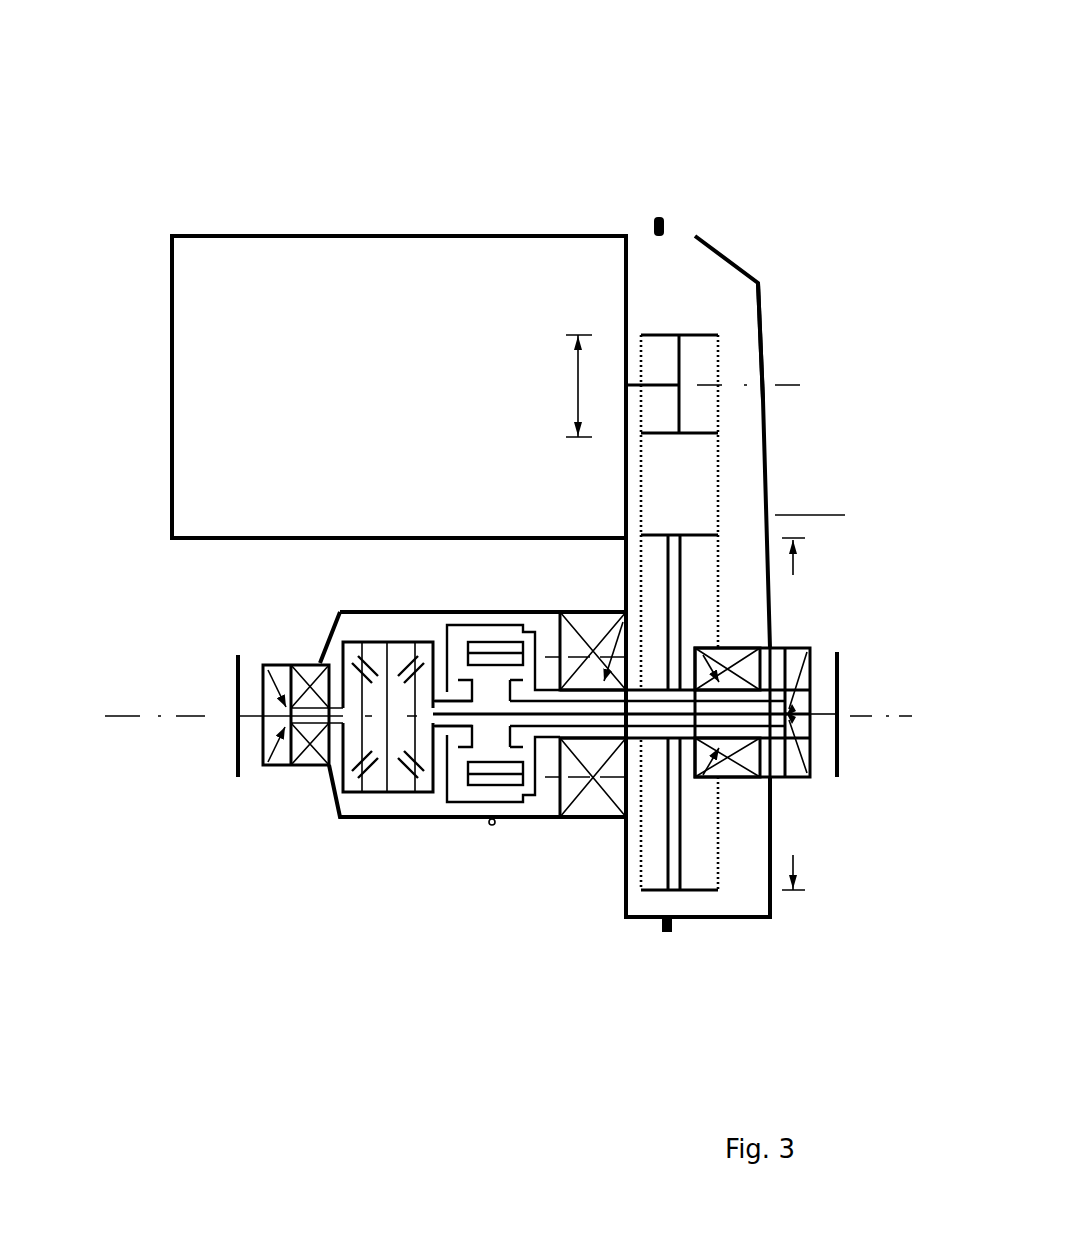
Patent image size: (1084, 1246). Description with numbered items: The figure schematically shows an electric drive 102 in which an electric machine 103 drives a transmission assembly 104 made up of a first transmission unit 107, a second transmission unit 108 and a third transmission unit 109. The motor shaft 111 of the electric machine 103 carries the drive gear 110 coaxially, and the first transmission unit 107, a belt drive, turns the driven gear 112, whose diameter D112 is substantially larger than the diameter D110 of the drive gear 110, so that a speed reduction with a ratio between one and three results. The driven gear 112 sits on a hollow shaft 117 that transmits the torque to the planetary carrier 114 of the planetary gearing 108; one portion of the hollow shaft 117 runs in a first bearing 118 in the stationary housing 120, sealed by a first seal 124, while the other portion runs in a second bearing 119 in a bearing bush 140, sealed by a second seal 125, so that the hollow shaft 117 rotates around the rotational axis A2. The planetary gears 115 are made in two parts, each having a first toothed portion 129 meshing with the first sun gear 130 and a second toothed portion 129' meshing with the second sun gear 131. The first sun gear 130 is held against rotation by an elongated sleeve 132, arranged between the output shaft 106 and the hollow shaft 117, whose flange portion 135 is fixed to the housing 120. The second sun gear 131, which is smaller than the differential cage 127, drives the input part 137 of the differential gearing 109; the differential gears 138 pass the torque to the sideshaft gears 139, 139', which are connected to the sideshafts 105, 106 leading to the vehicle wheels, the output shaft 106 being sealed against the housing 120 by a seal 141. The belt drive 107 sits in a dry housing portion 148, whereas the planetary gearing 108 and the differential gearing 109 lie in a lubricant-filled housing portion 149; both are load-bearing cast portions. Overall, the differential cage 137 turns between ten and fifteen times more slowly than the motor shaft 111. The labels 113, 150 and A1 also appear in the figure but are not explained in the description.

The electric drive 102 is at (461, 102).
The electric machine 103 is at (308, 250).
The transmission assembly 104 is at (736, 246).
The sideshaft 105 is at (250, 720).
The output shaft 106 is at (822, 710).
The first transmission unit 107 is at (738, 450).
The second transmission unit 108 is at (492, 825).
The differential gearing 109 is at (378, 800).
The drive gear 110 is at (698, 335).
The motor shaft 111 is at (659, 383).
The driven gear 112 is at (692, 893).
The rotor body 113 is at (723, 487).
The planetary carrier 114 is at (468, 632).
The planetary gears 115 is at (498, 632).
The hollow shaft 117 is at (703, 790).
The first bearing 118 is at (583, 818).
The second bearing 119 is at (745, 650).
The stationary housing 120 is at (770, 342).
The first seal 124 is at (604, 747).
The second seal 125 is at (746, 820).
The differential cage 127 is at (503, 790).
The first toothed portion 129 is at (437, 640).
The second toothed portion 129' is at (533, 638).
The first sun gear 130 is at (540, 800).
The second sun gear 131 is at (450, 780).
The sleeve 132 is at (650, 897).
The flange portion 135 is at (778, 762).
The input part 137 is at (372, 640).
The differential gears 138 is at (395, 762).
The sideshaft gear 139 is at (318, 778).
The sideshaft gear 139' is at (361, 805).
The bearing bush 140 is at (795, 762).
The seal 141 is at (805, 742).
The housing portion 148 is at (835, 512).
The housing portion 149 is at (577, 608).
The sensor 150 is at (659, 215).
The rotor axis A1 is at (795, 383).
The rotational axis A2 is at (200, 712).
The drive gear diameter D110 is at (552, 386).
The driven gear diameter D112 is at (821, 714).